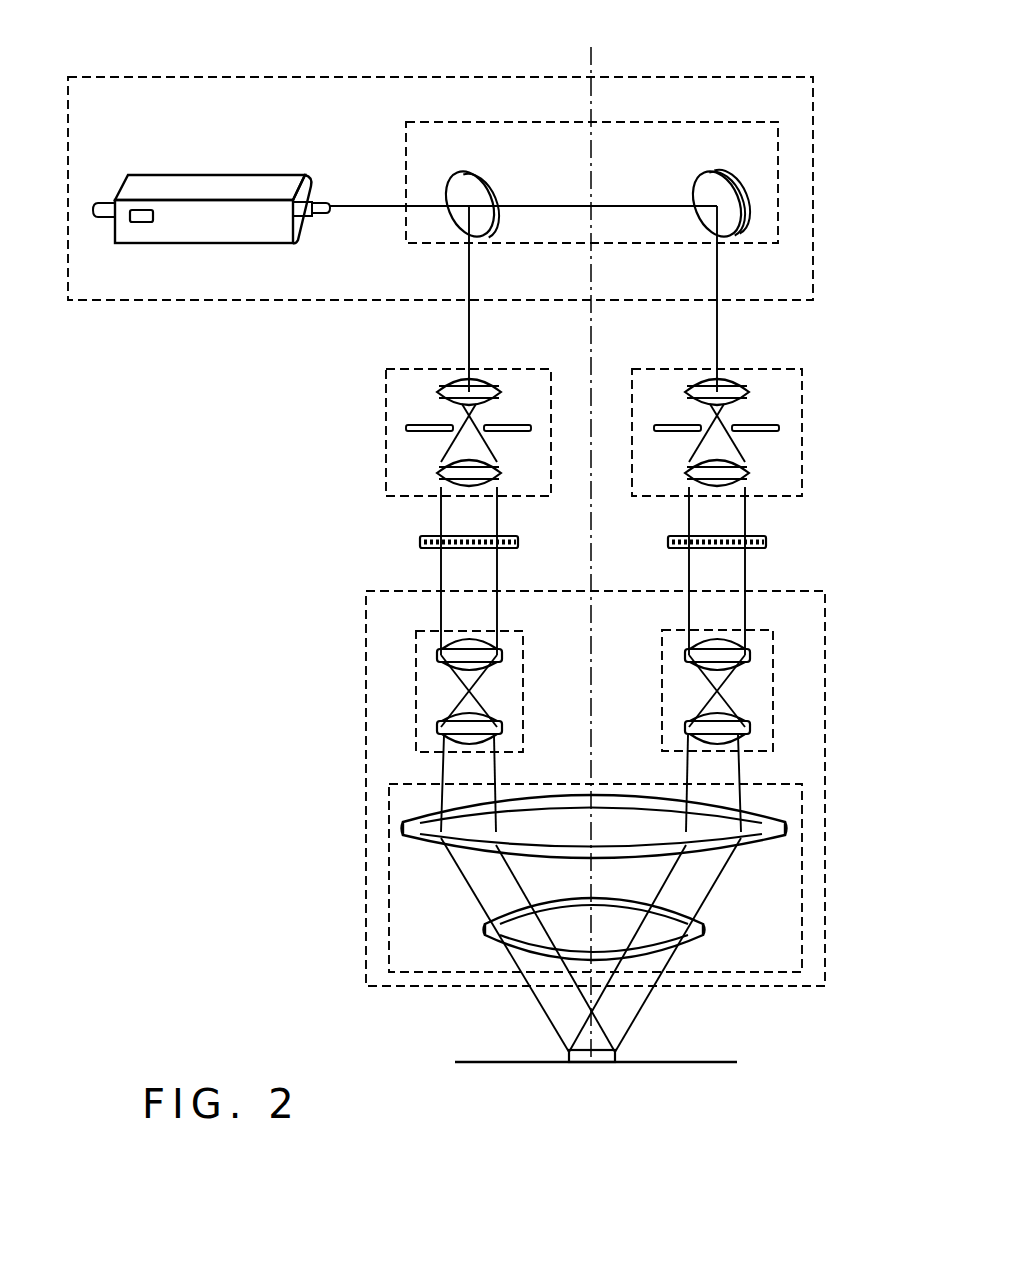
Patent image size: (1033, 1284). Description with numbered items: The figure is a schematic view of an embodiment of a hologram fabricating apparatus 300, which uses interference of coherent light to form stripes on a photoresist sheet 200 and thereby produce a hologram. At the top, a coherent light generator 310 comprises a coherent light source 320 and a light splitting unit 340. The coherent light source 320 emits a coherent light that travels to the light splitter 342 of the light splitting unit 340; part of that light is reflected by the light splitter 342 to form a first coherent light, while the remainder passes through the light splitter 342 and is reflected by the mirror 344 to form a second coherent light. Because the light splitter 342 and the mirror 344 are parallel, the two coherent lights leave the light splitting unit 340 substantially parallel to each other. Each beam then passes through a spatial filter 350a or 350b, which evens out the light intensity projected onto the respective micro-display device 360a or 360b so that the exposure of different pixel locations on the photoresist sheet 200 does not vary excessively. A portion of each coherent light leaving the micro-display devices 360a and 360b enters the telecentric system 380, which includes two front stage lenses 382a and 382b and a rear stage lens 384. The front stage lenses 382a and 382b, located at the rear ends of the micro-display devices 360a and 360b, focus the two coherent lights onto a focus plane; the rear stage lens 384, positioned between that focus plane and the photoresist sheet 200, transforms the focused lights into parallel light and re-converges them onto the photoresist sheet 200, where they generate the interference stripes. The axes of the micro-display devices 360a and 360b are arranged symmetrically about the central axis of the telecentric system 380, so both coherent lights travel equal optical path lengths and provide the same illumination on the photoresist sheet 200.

The hologram fabricating apparatus 300 is at (513, 19).
The coherent light generator 310 is at (745, 77).
The coherent light source 320 is at (222, 180).
The light splitting unit 340 is at (657, 122).
The light splitter 342 is at (518, 167).
The mirror 344 is at (693, 184).
The spatial filter 350a is at (497, 369).
The spatial filter 350b is at (745, 369).
The micro-display device 360a is at (505, 536).
The micro-display device 360b is at (753, 536).
The telecentric system 380 is at (795, 591).
The front stage lens 382a is at (499, 631).
The front stage lens 382b is at (749, 630).
The rear stage lens 384 is at (622, 783).
The photoresist sheet 200 is at (620, 1055).